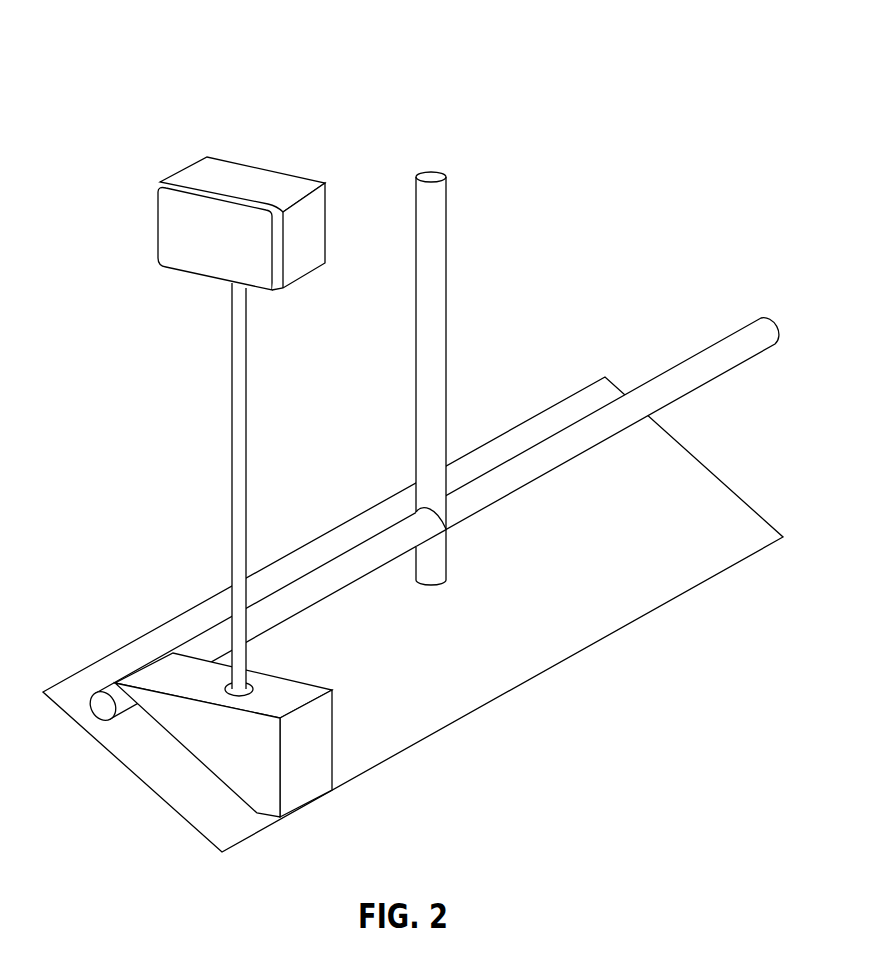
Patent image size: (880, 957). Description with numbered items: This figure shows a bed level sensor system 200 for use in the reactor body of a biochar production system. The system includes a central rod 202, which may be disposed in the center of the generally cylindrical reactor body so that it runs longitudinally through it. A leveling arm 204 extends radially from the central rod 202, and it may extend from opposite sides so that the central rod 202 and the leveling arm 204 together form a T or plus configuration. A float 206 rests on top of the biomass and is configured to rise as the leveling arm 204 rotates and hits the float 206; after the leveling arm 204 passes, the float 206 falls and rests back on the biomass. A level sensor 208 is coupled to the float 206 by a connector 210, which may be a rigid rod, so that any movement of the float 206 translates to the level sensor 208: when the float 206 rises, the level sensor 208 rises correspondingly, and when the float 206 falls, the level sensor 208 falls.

The bed level sensor system 200 is at (411, 439).
The central rod 202 is at (466, 207).
The leveling arm 204 is at (620, 415).
The float 206 is at (172, 758).
The level sensor 208 is at (142, 198).
The connector 210 is at (237, 405).